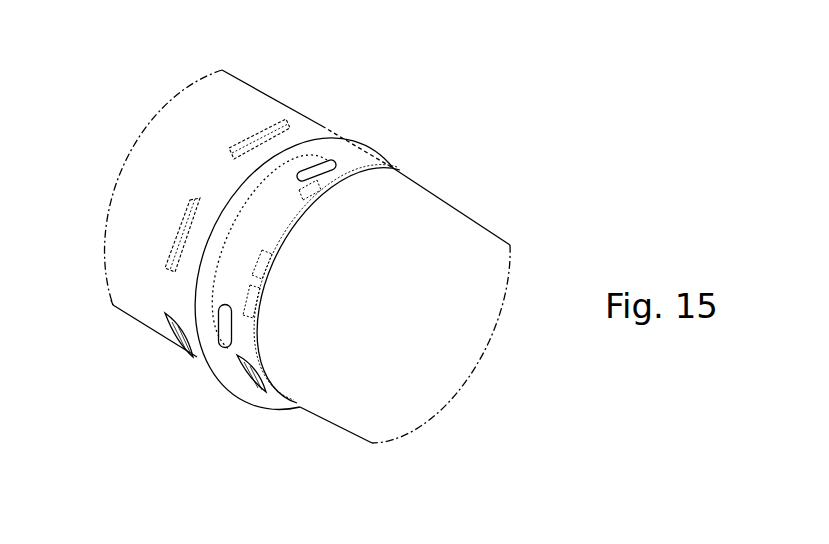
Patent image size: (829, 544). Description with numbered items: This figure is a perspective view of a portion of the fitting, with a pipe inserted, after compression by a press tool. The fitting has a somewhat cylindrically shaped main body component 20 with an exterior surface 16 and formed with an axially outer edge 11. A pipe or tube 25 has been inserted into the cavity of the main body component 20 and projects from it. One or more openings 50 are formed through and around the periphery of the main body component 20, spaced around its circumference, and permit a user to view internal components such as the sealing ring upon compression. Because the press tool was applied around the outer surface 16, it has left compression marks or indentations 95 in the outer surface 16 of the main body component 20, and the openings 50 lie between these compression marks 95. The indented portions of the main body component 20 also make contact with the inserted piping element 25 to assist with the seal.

The axially outer edge 11 is at (403, 178).
The exterior surface 16 is at (187, 127).
The main body component 20 is at (133, 307).
The pipe or tube 25 is at (492, 246).
The opening 50 is at (321, 163).
The compression marks or indentations 95 is at (256, 137).